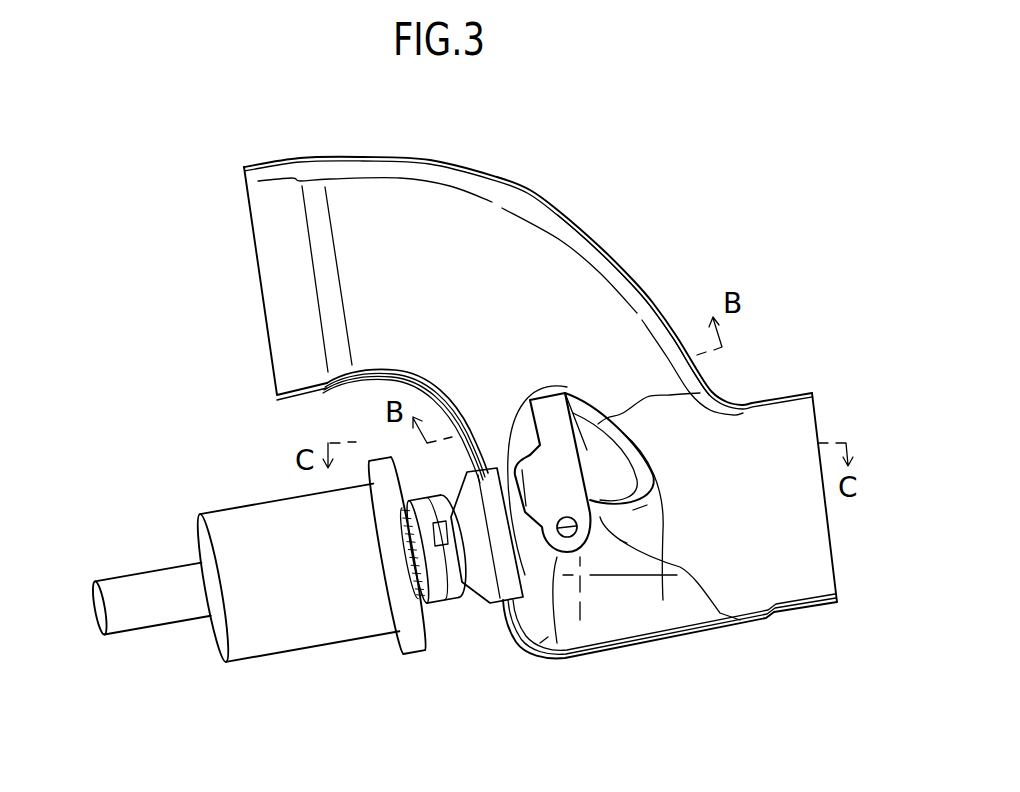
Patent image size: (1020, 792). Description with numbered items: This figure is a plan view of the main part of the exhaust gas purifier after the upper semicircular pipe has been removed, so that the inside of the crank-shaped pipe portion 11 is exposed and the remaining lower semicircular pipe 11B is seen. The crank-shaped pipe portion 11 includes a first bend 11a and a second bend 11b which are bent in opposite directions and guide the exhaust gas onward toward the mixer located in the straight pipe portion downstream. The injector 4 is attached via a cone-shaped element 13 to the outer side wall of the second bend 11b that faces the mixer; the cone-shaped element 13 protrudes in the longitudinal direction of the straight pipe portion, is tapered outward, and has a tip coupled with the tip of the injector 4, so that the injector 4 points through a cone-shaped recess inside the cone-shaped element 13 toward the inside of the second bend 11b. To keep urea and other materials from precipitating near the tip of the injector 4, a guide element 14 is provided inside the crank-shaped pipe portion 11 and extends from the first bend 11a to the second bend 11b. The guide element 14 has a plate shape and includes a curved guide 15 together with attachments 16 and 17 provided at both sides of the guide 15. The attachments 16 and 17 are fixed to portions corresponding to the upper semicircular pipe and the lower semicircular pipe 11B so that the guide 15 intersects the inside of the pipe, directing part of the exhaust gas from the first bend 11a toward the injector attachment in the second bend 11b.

The injector 4 is at (153, 634).
The crank-shaped pipe portion 11 is at (524, 192).
The lower semicircular pipe 11B is at (560, 268).
The first bend 11a is at (637, 277).
The second bend 11b is at (538, 661).
The cone-shaped element 13 is at (477, 590).
The guide element 14 is at (597, 431).
The guide 15 is at (535, 445).
The attachment 16 is at (537, 513).
The attachment 17 is at (663, 600).